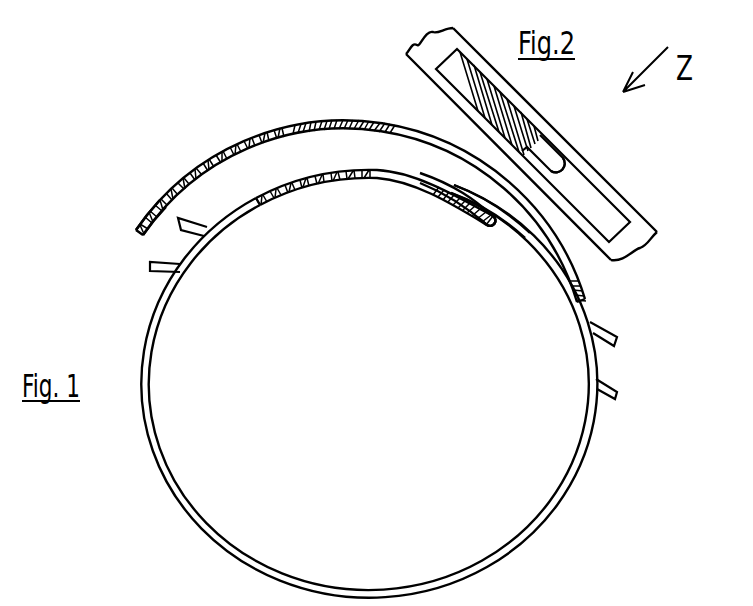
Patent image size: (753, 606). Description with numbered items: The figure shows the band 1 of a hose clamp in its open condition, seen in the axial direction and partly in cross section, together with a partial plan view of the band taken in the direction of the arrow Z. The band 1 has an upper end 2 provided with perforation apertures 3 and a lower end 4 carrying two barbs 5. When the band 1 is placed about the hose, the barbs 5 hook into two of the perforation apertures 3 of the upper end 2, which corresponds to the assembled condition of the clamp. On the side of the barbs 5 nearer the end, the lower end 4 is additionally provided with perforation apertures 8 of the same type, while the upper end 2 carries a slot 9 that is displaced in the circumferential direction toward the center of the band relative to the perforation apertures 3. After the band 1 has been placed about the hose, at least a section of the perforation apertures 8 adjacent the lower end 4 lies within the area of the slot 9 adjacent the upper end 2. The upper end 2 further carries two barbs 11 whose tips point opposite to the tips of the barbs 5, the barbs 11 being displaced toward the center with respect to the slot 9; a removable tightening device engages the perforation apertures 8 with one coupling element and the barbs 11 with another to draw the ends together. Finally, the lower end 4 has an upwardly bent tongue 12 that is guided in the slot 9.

In FIG. 1, the band 1 is at (160, 443).
In FIG. 1, the upper end 2 is at (420, 50).
In FIG. 2, the upper end 2 is at (531, 144).
In FIG. 1, the perforation apertures 3 is at (147, 217).
In FIG. 1, the lower end 4 is at (273, 188).
In FIG. 2, the lower end 4 is at (512, 112).
In FIG. 1, the barbs 5 is at (150, 266).
In FIG. 1, the perforation apertures 8 is at (440, 203).
In FIG. 2, the perforation apertures 8 is at (520, 120).
In FIG. 1, the slot 9 is at (556, 249).
In FIG. 2, the slot 9 is at (590, 193).
In FIG. 1, the barbs 11 is at (614, 394).
In FIG. 1, the tongue 12 is at (492, 218).
In FIG. 2, the tongue 12 is at (563, 163).